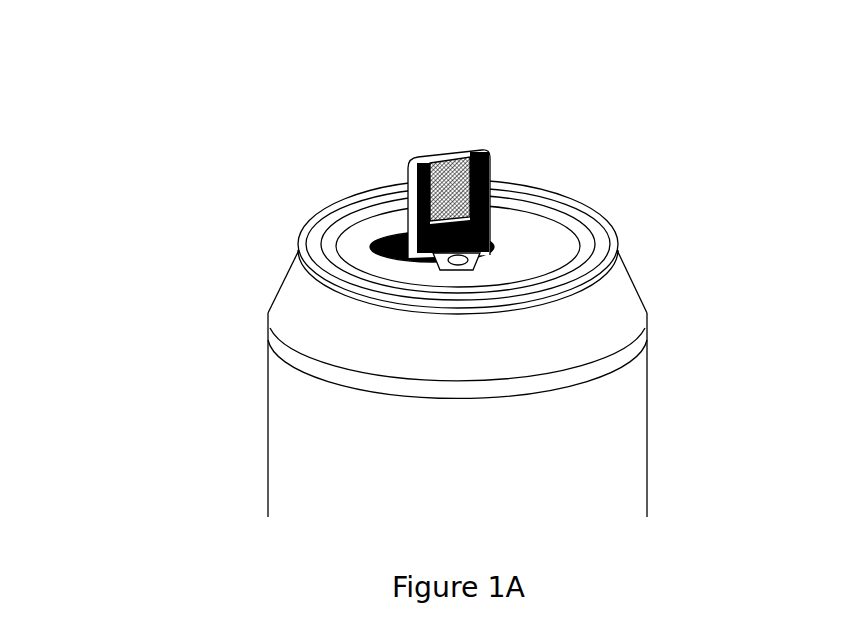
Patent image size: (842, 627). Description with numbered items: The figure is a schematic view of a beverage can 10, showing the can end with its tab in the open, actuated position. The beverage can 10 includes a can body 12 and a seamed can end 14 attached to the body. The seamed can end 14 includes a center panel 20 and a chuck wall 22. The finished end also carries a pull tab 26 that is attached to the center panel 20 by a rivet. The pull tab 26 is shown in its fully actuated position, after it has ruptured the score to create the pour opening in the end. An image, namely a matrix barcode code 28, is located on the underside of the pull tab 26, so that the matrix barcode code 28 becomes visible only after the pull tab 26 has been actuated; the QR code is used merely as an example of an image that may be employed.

The beverage can 10 is at (735, 296).
The can body 12 is at (338, 383).
The seamed can end 14 is at (341, 243).
The center panel 20 is at (567, 218).
The chuck wall 22 is at (544, 162).
The pull tab 26 is at (397, 149).
The matrix barcode code 28 is at (530, 149).